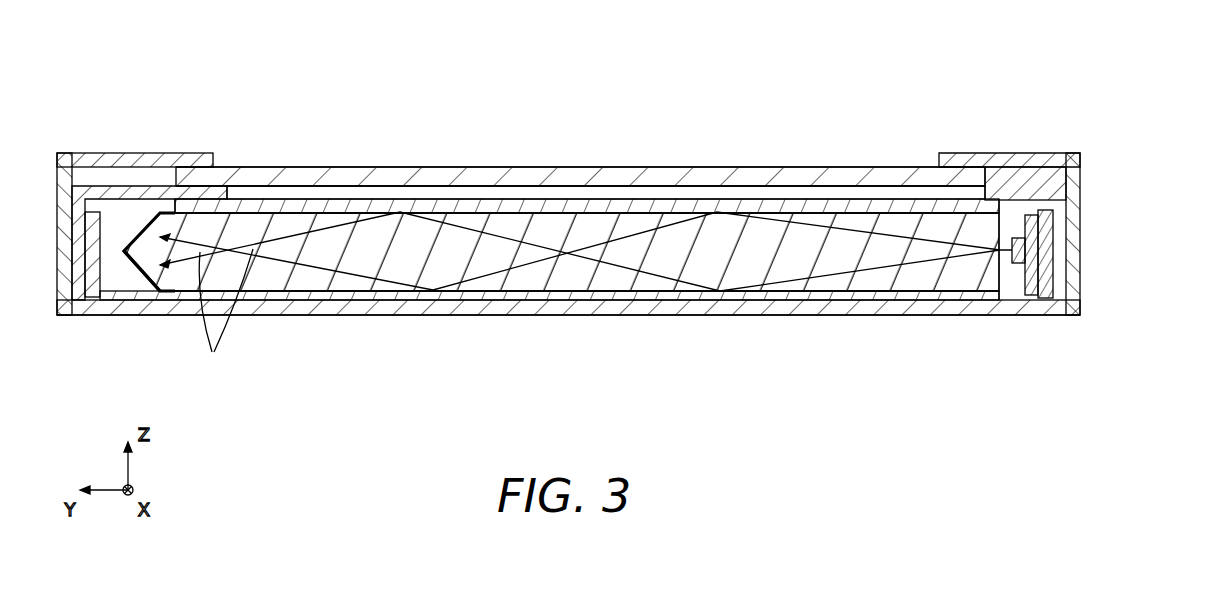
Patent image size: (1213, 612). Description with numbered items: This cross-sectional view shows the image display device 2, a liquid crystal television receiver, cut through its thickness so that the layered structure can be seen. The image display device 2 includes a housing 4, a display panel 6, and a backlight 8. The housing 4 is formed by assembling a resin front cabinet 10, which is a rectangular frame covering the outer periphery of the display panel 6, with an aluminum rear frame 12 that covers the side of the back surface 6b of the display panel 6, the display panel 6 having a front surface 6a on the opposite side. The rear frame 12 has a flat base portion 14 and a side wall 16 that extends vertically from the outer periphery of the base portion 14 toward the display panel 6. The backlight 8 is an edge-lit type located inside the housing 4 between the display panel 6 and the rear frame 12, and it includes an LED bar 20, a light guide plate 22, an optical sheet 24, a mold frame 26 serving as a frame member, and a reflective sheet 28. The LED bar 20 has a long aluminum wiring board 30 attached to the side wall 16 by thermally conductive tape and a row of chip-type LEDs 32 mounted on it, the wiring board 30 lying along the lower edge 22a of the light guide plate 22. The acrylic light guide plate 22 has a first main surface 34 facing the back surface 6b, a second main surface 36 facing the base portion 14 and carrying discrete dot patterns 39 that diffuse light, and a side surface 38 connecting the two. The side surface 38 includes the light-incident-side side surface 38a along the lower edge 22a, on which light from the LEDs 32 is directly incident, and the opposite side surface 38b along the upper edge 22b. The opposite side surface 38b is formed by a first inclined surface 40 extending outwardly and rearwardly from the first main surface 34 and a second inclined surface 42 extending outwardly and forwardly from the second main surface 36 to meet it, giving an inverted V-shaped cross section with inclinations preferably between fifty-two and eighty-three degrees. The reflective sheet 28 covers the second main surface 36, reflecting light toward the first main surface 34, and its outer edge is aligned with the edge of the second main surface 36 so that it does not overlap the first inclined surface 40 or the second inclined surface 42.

The image display device 2 is at (944, 60).
The housing 4 is at (613, 271).
The display panel 6 is at (580, 140).
The front surface of cover glass 6a is at (662, 167).
The back surface 6b is at (716, 186).
The backlight 8 is at (810, 196).
The front cabinet 10 is at (1078, 302).
The rear frame 12 is at (1003, 313).
The base portion 14 is at (603, 308).
The side wall 16 is at (1050, 212).
The LED bar 20 is at (1096, 255).
The light guide plate 22 is at (561, 242).
The lower edge 22a is at (997, 202).
The upper edge 22b is at (174, 208).
The optical sheet 24 is at (420, 212).
The mold frame 26 is at (102, 188).
The reflective sheet 28 is at (428, 292).
The wiring board 30 is at (1022, 250).
The LEDs 32 is at (1033, 262).
The first main surface 34 is at (480, 206).
The second main surface 36 is at (486, 296).
The side surface 38 is at (1012, 147).
The light-incident-side side surface 38a is at (1028, 185).
The opposite side surface 38b is at (150, 294).
The dot patterns 39 is at (290, 300).
The first inclined surface 40 is at (125, 242).
The second inclined surface 42 is at (140, 272).